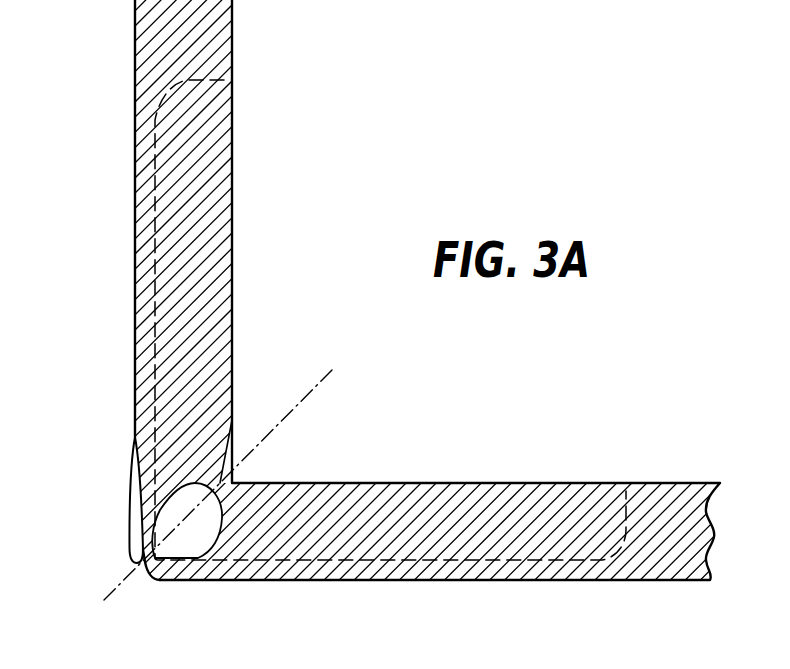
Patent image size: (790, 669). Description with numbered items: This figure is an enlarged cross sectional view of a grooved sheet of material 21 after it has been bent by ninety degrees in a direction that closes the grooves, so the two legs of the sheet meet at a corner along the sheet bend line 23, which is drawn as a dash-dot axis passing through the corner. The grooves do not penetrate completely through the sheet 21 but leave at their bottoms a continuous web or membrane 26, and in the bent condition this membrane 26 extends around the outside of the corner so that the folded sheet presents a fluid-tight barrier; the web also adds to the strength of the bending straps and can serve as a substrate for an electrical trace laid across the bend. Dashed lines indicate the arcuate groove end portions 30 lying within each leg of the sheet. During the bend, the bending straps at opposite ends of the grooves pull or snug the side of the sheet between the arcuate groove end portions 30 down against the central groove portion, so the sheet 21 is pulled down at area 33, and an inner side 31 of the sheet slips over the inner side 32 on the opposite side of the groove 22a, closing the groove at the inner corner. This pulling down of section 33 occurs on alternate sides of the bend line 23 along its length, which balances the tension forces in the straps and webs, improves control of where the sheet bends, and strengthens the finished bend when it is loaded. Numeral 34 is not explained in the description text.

The sheet of material 21 is at (233, 53).
The groove 22a is at (131, 553).
The sheet bend line 23 is at (335, 378).
The web or membrane 26 is at (142, 579).
The arcuate groove end portions 30 is at (220, 100).
The inner side of the sheet 31 is at (155, 528).
The inner side on the opposite side of the groove 32 is at (232, 440).
The pulled-down area of the sheet 33 is at (131, 478).
The outer surface 34 is at (133, 243).